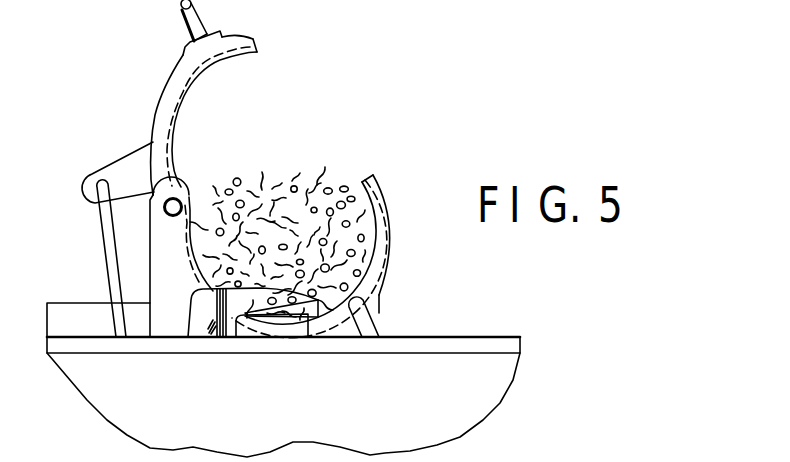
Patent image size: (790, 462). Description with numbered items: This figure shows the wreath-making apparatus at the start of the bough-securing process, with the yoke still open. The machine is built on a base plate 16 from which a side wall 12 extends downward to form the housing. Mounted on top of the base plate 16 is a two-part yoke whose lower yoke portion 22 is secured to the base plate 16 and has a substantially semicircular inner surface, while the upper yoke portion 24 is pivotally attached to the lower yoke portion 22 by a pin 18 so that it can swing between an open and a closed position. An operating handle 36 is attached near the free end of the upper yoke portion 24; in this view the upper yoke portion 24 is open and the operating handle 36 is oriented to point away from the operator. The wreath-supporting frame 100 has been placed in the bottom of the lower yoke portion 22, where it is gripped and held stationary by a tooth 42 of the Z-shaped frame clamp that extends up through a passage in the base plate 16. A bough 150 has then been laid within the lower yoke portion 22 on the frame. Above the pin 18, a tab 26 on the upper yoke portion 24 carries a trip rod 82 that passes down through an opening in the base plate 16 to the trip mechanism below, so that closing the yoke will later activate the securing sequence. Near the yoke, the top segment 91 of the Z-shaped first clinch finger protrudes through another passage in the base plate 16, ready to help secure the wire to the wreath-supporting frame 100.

The side wall 12 is at (477, 397).
The base plate 16 is at (490, 337).
The pin 18 is at (183, 197).
The lower yoke portion 22 is at (386, 228).
The upper yoke portion 24 is at (170, 92).
The tab 26 is at (130, 160).
The operating handle 36 is at (204, 19).
The tooth 42 is at (214, 330).
The trip rod 82 is at (106, 264).
The top segment 91 is at (381, 330).
The wreath-supporting frame 100 is at (306, 312).
The bough 150 is at (302, 203).